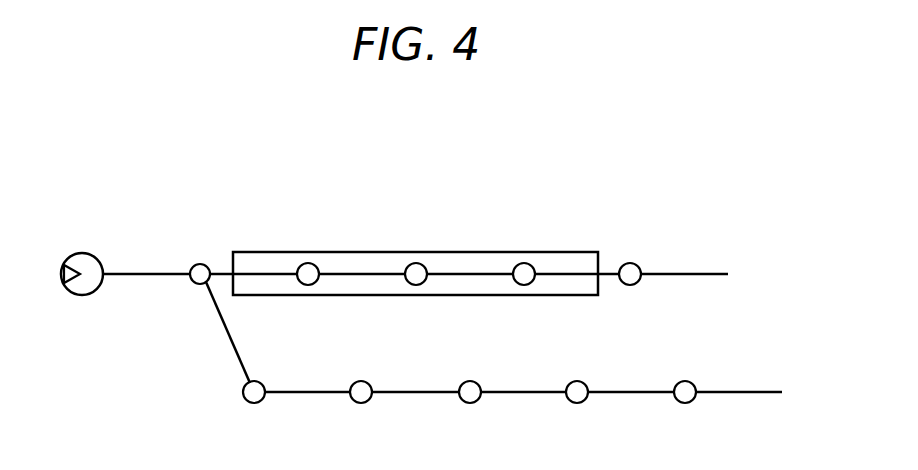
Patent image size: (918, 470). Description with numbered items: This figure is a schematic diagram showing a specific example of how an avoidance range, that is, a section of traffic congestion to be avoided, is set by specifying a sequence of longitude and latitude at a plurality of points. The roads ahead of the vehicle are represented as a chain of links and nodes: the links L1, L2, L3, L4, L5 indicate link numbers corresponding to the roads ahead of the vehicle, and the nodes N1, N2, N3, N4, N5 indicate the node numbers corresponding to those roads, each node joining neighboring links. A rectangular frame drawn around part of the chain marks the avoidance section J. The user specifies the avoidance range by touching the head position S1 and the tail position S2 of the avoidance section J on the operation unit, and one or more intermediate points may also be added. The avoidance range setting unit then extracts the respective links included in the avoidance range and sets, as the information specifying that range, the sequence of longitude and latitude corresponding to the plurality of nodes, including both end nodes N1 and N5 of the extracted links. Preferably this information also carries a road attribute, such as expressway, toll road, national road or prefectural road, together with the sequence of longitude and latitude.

The link L1 is at (147, 274).
The link L2 is at (262, 274).
The link L3 is at (369, 274).
The link L4 is at (477, 274).
The link L5 is at (568, 274).
The avoidance section J is at (432, 252).
The head position S1 is at (232, 242).
The tail position S2 is at (598, 242).
The node N1 is at (195, 284).
The node N2 is at (316, 283).
The node N3 is at (424, 283).
The node N4 is at (532, 283).
The node N5 is at (639, 283).